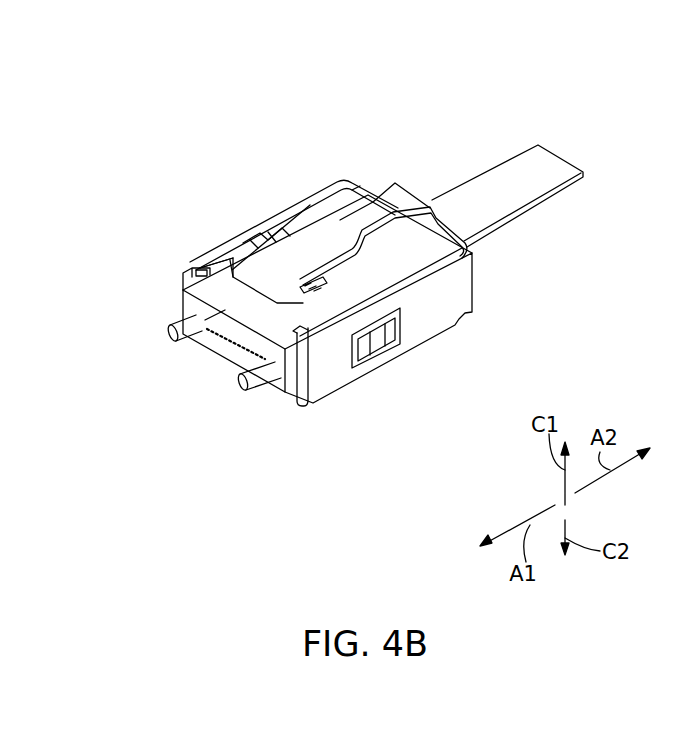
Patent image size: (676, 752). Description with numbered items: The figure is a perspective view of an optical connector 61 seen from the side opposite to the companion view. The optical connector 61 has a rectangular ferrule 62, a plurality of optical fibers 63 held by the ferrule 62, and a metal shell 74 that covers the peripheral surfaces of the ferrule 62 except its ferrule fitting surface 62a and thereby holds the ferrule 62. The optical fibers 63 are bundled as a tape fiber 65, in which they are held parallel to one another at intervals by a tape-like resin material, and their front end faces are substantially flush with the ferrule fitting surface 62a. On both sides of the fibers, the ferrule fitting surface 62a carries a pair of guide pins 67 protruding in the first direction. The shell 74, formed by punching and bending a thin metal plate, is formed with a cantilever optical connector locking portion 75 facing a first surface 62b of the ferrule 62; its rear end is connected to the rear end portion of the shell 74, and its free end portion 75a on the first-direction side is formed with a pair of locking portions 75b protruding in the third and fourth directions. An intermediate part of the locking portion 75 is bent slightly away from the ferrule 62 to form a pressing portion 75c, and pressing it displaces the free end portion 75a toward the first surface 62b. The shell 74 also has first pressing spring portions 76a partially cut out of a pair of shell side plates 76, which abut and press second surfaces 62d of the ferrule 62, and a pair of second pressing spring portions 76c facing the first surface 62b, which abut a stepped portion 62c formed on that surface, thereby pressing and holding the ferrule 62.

The optical connector 61 is at (282, 147).
The ferrule 62 is at (197, 280).
The ferrule fitting surface 62a is at (203, 342).
The first surface 62b is at (307, 197).
The stepped portion 62c is at (400, 212).
The second surface 62d is at (293, 388).
The optical fibers 63 is at (233, 345).
The tape fiber 65 is at (522, 170).
The guide pins 67 is at (178, 316).
The shell 74 is at (432, 337).
The optical connector locking portion 75 is at (307, 218).
The free end portion 75a is at (218, 312).
The locking portions 75b is at (240, 247).
The pressing portion 75c is at (355, 205).
The shell side plates 76 is at (450, 292).
The first pressing spring portions 76a is at (367, 352).
The second pressing spring portions 76c is at (247, 241).